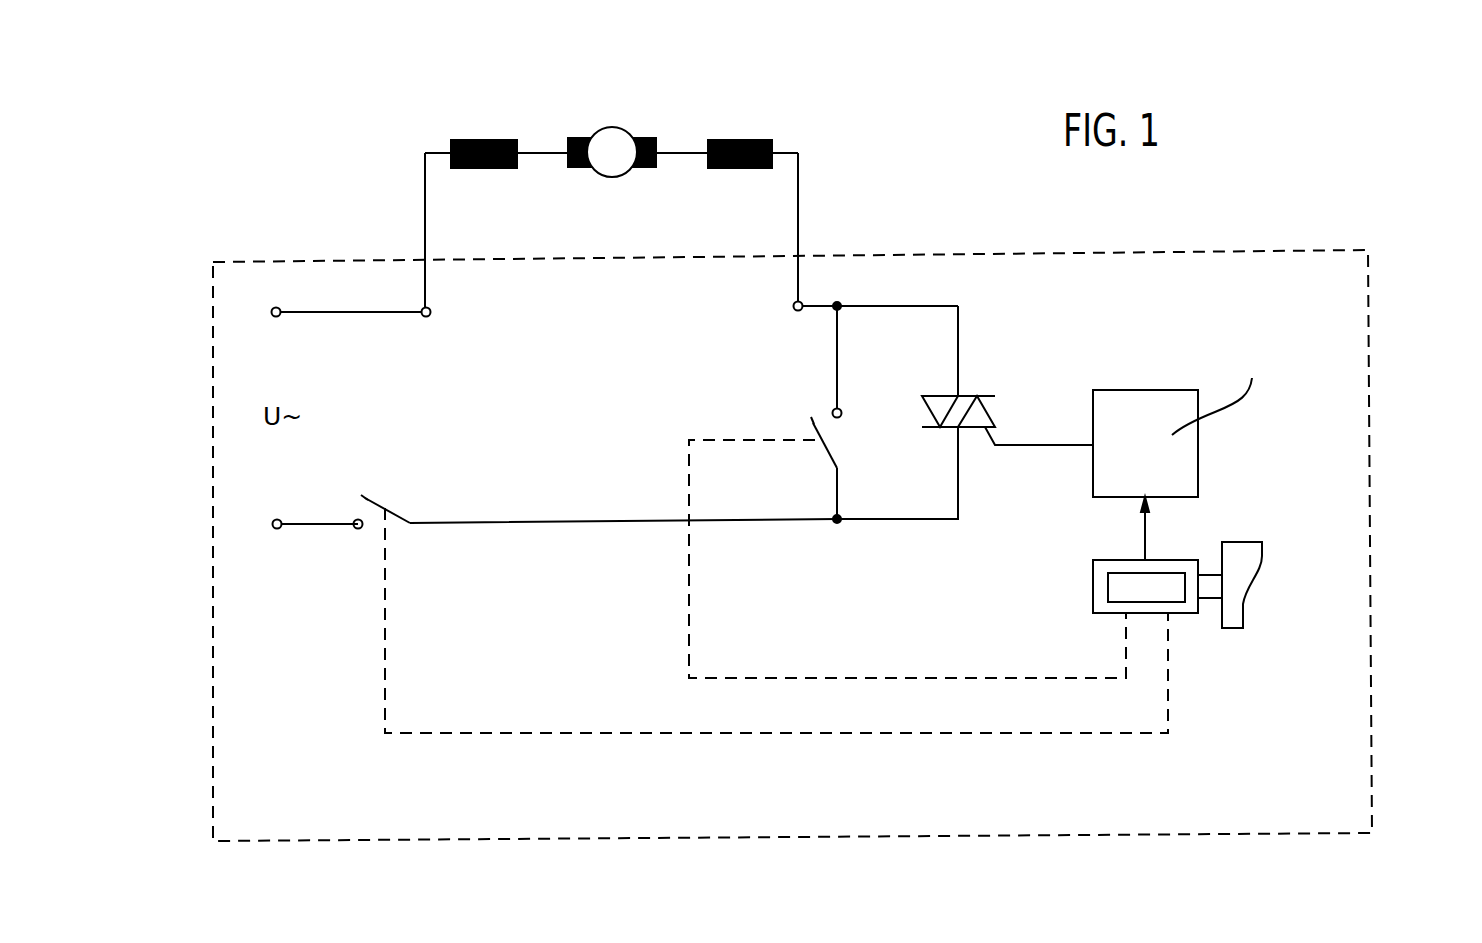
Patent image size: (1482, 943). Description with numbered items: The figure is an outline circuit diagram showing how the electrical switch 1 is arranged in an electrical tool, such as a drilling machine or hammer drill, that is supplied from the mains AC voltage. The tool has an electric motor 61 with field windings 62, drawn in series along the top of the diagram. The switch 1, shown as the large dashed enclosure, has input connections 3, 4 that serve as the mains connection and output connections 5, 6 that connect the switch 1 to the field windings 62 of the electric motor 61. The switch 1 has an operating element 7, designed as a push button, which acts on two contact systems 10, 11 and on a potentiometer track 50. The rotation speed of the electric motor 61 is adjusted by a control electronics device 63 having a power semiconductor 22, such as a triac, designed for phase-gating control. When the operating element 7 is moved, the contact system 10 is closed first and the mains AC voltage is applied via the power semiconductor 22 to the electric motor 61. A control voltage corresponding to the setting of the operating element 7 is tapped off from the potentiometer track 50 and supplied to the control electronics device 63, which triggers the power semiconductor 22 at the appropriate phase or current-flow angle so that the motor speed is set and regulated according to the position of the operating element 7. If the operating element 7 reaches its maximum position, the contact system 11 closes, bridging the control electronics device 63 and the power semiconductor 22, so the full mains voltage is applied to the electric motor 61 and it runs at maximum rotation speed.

The electrical switch 1 is at (1372, 613).
The input connection 3 is at (274, 308).
The input connection 4 is at (274, 526).
The output connection 5 is at (802, 302).
The output connection 6 is at (424, 308).
The operating element 7 is at (1253, 557).
The contact system 10 is at (372, 503).
The contact system 11 is at (810, 423).
The power semiconductor 22 is at (985, 396).
The potentiometer track 50 is at (1119, 585).
The electric motor 61 is at (613, 126).
The field windings 62 is at (485, 138).
The control electronics device 63 is at (1119, 400).